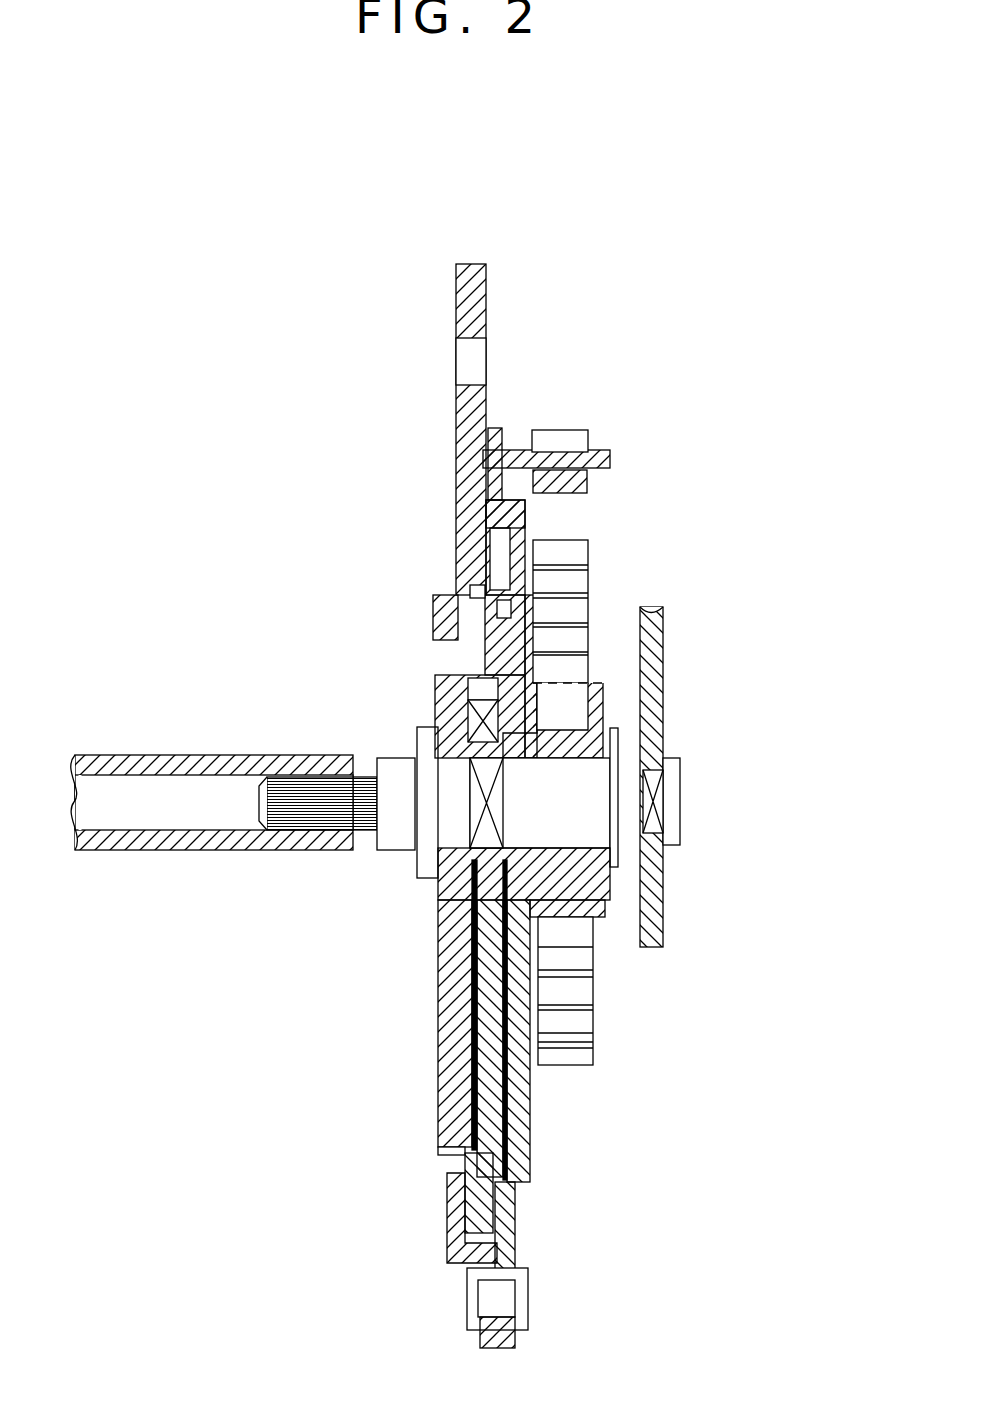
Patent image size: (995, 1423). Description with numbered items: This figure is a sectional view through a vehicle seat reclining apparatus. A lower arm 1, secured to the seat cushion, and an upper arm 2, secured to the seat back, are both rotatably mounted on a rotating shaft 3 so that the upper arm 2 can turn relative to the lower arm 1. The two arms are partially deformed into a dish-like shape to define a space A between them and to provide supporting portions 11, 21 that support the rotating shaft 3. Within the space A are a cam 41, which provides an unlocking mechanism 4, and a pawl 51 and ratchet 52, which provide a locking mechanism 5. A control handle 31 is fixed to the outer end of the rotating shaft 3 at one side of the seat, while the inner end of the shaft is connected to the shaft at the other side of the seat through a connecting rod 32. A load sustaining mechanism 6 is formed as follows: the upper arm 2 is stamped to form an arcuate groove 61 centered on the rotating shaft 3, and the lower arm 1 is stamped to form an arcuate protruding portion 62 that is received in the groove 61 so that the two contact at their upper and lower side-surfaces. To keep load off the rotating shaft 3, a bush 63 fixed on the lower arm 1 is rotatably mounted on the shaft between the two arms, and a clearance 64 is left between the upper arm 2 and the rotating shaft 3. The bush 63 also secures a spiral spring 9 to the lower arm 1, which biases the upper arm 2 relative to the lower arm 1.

The lower arm 1 is at (504, 1233).
The upper arm 2 is at (480, 288).
The rotating shaft 3 is at (573, 793).
The unlocking mechanism 4 is at (412, 929).
The locking mechanism 5 is at (421, 1133).
The load sustaining mechanism 6 is at (421, 605).
The spiral spring 9 is at (555, 440).
The supporting portion 11 is at (520, 1088).
The supporting portion 21 is at (458, 907).
The control handle 31 is at (663, 913).
The connecting rod 32 is at (228, 755).
The cam 41 is at (440, 965).
The pawl 51 is at (500, 1140).
The ratchet 52 is at (462, 1158).
The groove 61 is at (466, 586).
The protruding portion 62 is at (500, 593).
The bush 63 is at (585, 887).
The clearance 64 is at (445, 680).
The space A is at (490, 618).